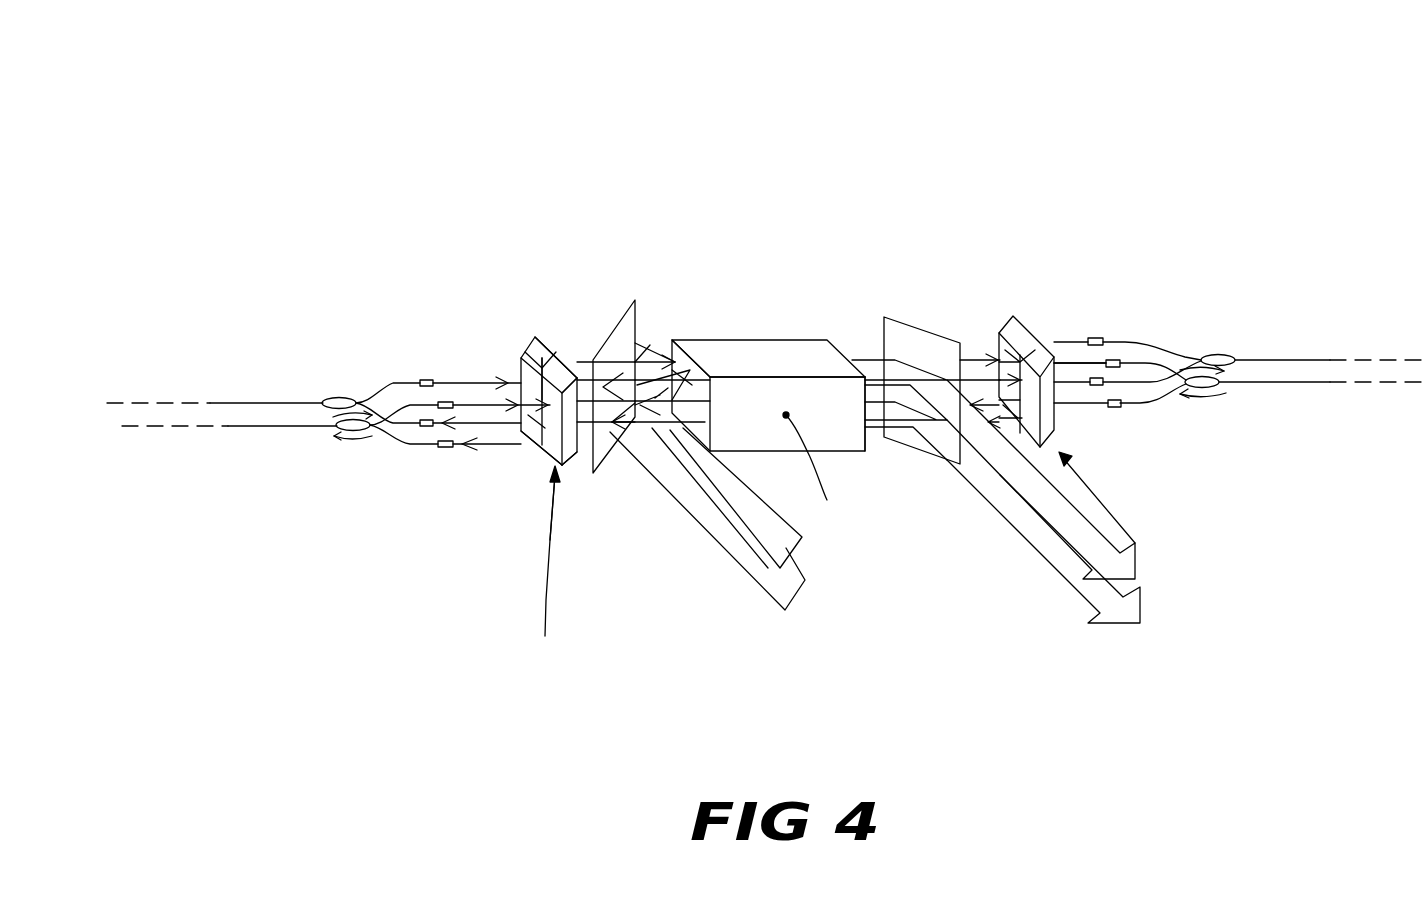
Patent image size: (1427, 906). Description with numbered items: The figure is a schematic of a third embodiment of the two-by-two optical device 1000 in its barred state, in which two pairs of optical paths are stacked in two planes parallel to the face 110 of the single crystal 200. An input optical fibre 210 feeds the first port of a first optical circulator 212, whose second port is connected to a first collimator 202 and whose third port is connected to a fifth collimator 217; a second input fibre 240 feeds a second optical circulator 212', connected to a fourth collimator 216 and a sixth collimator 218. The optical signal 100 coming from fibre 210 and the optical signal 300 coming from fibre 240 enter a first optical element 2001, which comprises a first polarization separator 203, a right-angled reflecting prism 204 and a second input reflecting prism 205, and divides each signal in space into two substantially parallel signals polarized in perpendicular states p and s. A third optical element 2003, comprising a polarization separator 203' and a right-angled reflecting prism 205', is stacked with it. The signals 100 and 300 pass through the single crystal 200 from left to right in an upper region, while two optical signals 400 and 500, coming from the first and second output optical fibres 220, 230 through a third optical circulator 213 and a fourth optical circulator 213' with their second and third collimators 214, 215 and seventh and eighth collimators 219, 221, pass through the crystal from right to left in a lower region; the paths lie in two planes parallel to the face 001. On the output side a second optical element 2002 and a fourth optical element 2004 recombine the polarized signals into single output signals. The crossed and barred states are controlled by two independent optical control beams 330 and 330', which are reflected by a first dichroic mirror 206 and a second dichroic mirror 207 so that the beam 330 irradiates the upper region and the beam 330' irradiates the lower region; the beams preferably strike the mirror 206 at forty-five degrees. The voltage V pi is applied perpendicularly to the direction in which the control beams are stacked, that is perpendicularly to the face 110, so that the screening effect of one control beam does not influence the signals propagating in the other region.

The optical device 1000 is at (230, 131).
The input optical fibre 210 is at (137, 399).
The second input fibre 240 is at (150, 430).
The first optical circulator 212 is at (348, 376).
The second optical circulator 212' is at (380, 474).
The first collimator 202 is at (422, 380).
The fourth collimator 216 is at (447, 401).
The fifth collimator 217 is at (428, 426).
The sixth collimator 218 is at (447, 448).
The optical signal 100 is at (467, 381).
The optical signal 300 is at (512, 394).
The first polarization separator 203 is at (523, 296).
The right-angled reflecting prism 204 is at (561, 339).
The second input reflecting prism 205 is at (587, 342).
The polarization separator 203' is at (525, 479).
The right-angled reflecting prism 205' is at (607, 498).
The first optical element 2001 is at (545, 568).
The third optical element 2003 is at (598, 572).
The first dichroic mirror 206 is at (613, 340).
The face of the single crystal 001 is at (762, 350).
The crystal element 200 is at (735, 333).
The face of the single crystal 110 is at (668, 338).
The optical control beam 330 is at (791, 511).
The optical control beam 330' is at (707, 519).
The second dichroic mirror 207 is at (908, 337).
The second optical element 2002 is at (1093, 403).
The fourth optical element 2004 is at (1140, 541).
The optical signal 400 is at (1053, 387).
The second collimator 214 is at (1094, 336).
The third collimator 215 is at (1112, 359).
The seventh collimator 219 is at (1103, 384).
The eighth collimator 221 is at (1113, 407).
The third optical circulator 213 is at (1251, 310).
The fourth optical circulator 213' is at (1246, 403).
The first output optical fibre 220 is at (1366, 359).
The second output optical fibre 230 is at (1364, 384).
The optical signal 500 is at (1070, 383).